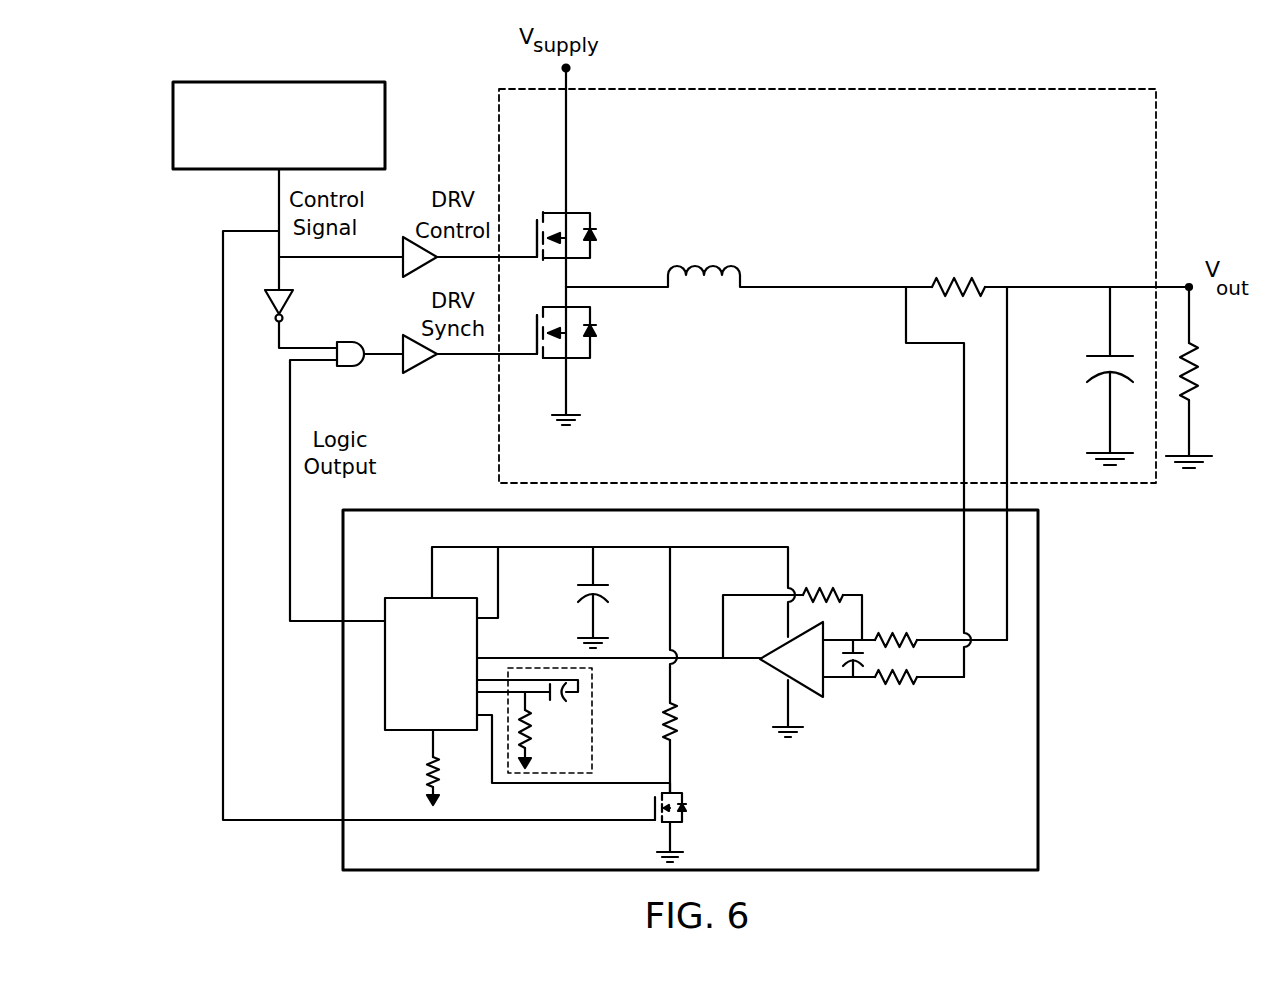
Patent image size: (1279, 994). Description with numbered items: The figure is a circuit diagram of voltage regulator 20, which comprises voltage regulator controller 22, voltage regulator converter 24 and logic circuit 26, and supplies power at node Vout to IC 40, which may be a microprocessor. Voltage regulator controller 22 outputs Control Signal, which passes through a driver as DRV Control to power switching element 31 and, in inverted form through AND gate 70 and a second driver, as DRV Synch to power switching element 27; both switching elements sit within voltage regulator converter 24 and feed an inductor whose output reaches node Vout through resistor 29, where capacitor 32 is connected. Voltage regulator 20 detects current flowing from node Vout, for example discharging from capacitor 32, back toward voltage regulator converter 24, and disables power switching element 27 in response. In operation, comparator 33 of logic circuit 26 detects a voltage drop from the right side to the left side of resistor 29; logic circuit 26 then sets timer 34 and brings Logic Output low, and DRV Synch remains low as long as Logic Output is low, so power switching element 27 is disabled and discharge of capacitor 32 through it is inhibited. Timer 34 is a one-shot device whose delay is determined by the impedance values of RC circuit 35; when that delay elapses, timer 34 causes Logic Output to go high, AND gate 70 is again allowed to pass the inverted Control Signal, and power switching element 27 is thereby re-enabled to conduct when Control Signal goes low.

The voltage regulator 20 is at (197, 358).
The voltage regulator controller 22 is at (290, 81).
The voltage regulator converter 24 is at (828, 89).
The logic circuit 26 is at (1038, 693).
The power switching element 27 is at (550, 362).
The resistor 29 is at (960, 265).
The power switching element 31 is at (550, 207).
The capacitor 32 is at (1108, 277).
The comparator 33 is at (823, 690).
The timer 34 is at (383, 662).
The RC circuit 35 is at (592, 722).
The IC 40 is at (1212, 372).
The AND gate 70 is at (352, 339).